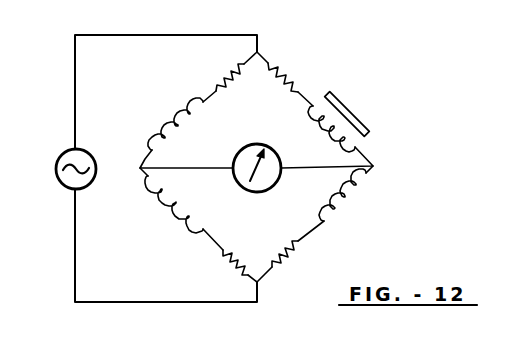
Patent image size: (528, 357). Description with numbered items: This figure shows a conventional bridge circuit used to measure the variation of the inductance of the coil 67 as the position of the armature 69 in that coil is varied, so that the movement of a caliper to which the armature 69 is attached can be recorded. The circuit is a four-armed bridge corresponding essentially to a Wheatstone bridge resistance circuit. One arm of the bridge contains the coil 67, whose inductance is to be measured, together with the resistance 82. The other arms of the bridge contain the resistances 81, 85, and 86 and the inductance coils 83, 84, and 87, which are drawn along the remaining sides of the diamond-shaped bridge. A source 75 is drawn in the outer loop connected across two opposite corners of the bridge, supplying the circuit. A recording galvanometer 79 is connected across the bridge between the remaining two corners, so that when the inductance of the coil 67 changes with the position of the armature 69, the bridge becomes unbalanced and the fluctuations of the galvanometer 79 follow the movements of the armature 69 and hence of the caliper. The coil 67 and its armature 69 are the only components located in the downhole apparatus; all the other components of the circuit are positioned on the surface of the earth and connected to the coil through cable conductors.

The AC source 75 is at (85, 139).
The resistance 81 is at (238, 68).
The resistance 82 is at (284, 72).
The inductance coil 83 is at (180, 113).
The inductance coil 84 is at (189, 209).
The resistance 85 is at (228, 262).
The resistance 86 is at (286, 265).
The inductance coil 87 is at (339, 216).
The coil 67 is at (346, 138).
The armature 69 is at (356, 113).
The recording galvanometer 79 is at (249, 146).